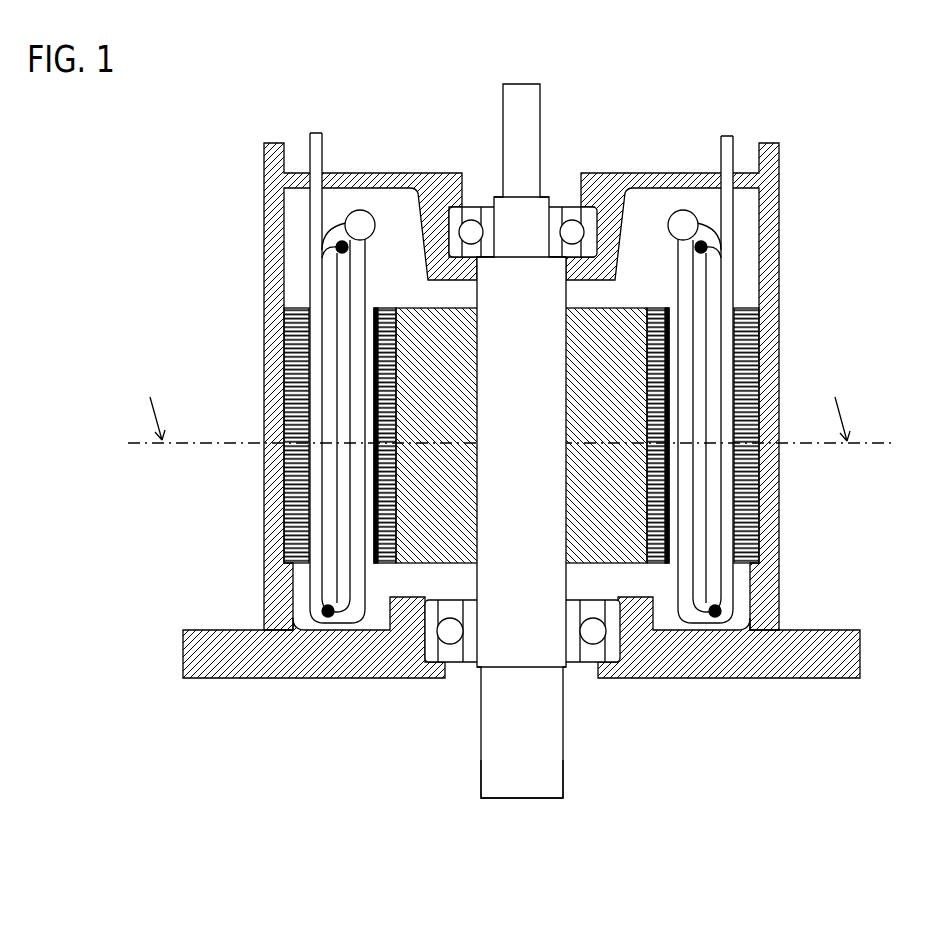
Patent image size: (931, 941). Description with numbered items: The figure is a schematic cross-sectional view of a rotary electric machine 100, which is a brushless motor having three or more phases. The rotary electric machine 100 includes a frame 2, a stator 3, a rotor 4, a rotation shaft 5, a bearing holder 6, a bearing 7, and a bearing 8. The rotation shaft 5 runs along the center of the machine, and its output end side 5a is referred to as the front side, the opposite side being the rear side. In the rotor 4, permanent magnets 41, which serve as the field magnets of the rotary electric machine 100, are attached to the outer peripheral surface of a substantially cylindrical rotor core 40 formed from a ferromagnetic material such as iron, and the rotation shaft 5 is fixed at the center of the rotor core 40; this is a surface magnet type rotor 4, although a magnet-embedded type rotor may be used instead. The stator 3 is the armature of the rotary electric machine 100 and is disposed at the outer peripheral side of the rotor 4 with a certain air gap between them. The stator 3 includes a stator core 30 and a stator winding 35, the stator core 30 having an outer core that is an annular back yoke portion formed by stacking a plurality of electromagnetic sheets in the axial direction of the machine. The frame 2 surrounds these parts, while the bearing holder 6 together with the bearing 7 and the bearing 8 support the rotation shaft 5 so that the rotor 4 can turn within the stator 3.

The rotary electric machine 100 is at (476, 502).
The frame 2 is at (263, 287).
The stator 3 is at (160, 453).
The stator core 30 is at (265, 487).
The stator winding 35 is at (322, 611).
The rotor 4 is at (848, 233).
The rotor core 40 is at (613, 347).
The permanent magnets 41 is at (640, 368).
The rotation shaft 5 is at (542, 723).
The output end side 5a is at (530, 787).
The bearing holder 6 is at (642, 680).
The bearing 7 is at (435, 680).
The bearing 8 is at (554, 207).